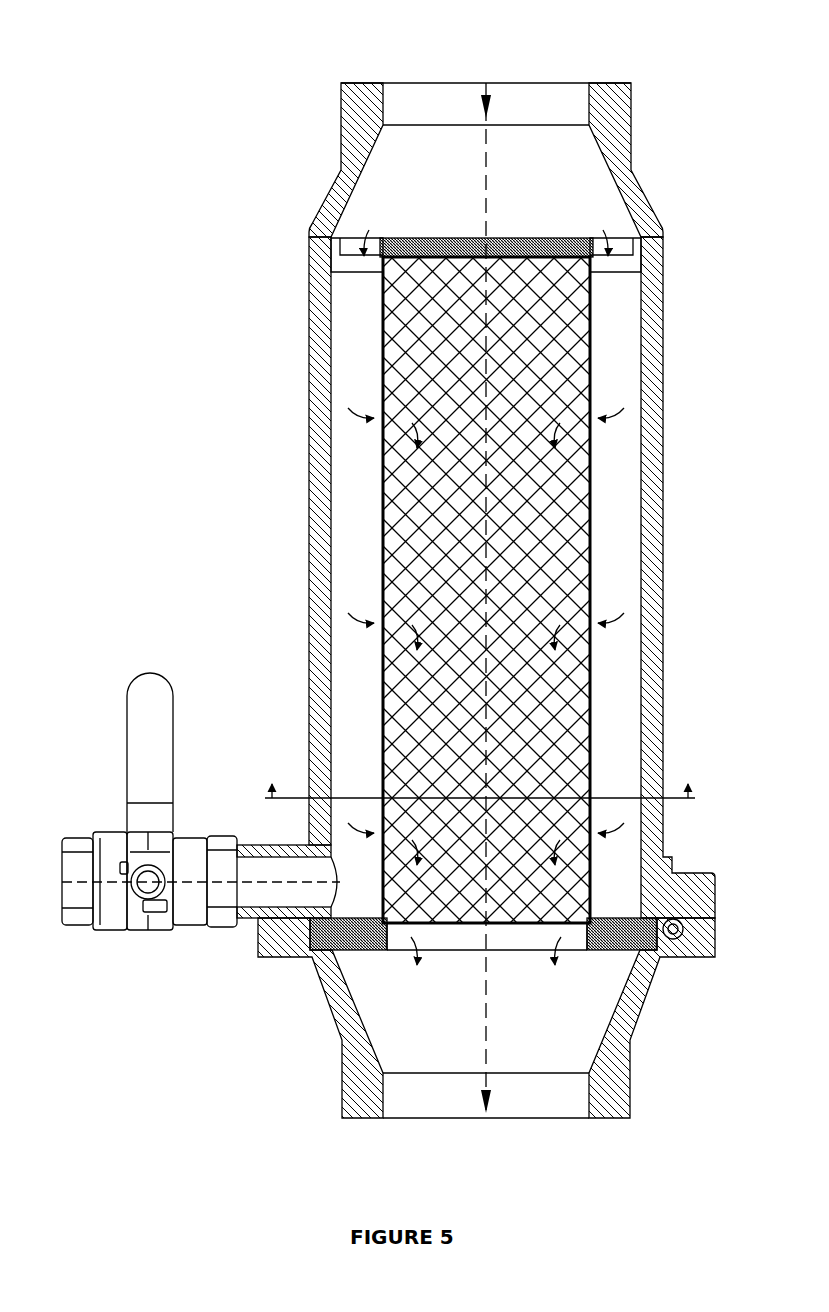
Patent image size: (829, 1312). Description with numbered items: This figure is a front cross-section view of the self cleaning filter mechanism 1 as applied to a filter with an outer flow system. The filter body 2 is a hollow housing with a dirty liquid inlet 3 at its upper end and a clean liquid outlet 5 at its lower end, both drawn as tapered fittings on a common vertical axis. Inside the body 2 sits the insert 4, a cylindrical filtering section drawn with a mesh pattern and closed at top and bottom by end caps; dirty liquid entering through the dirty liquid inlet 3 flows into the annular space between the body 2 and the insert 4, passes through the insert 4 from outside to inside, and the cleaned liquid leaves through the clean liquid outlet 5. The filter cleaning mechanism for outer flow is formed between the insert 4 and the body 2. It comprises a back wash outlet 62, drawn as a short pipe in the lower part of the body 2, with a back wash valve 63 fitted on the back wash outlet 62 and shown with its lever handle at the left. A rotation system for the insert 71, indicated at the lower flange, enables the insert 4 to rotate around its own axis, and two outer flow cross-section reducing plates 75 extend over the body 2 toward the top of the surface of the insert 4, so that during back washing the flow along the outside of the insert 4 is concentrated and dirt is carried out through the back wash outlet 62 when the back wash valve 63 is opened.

The self cleaning filter mechanism 1 is at (243, 128).
The body 2 is at (619, 124).
The dirty liquid inlet 3 is at (453, 95).
The insert 4 is at (592, 393).
The clean liquid outlet 5 is at (452, 1100).
The back wash outlet 62 is at (289, 882).
The back wash valve 63 is at (106, 843).
The rotation system for the insert 71 is at (676, 948).
The outer flow cross-section reducing plates 75 is at (328, 381).